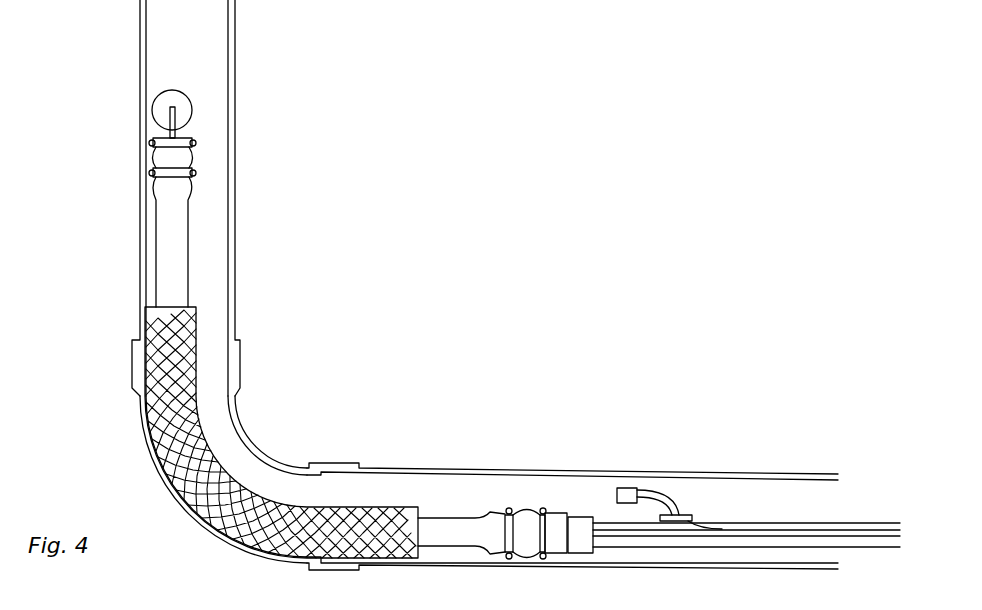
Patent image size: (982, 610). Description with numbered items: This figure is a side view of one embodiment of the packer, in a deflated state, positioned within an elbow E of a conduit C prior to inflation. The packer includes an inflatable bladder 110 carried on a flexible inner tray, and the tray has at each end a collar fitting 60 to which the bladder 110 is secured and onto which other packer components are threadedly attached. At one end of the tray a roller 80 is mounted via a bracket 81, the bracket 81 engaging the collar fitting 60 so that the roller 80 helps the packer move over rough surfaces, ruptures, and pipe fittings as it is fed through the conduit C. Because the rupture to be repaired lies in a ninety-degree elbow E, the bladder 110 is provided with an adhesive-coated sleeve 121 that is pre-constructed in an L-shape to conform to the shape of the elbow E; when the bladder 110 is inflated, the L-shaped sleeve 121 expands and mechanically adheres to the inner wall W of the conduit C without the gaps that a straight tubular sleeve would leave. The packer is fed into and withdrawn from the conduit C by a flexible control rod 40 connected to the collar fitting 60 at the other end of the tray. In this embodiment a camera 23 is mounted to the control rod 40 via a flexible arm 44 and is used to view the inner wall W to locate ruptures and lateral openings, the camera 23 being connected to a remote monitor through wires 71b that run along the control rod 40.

The conduit C is at (210, 63).
The inner wall W is at (228, 155).
The elbow E is at (280, 416).
The adhesive-coated sleeve 121 is at (230, 487).
The roller 80 is at (158, 102).
The bracket 81 is at (170, 135).
The collar fitting 60 is at (158, 158).
The inflatable bladder 110 is at (455, 518).
The camera 23 is at (627, 488).
The flexible arm 44 is at (673, 512).
The control rod 40 is at (787, 523).
The wires 71b is at (857, 528).